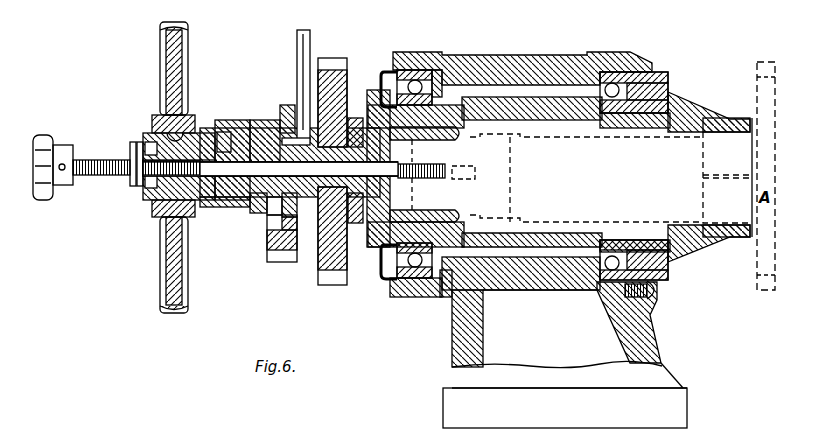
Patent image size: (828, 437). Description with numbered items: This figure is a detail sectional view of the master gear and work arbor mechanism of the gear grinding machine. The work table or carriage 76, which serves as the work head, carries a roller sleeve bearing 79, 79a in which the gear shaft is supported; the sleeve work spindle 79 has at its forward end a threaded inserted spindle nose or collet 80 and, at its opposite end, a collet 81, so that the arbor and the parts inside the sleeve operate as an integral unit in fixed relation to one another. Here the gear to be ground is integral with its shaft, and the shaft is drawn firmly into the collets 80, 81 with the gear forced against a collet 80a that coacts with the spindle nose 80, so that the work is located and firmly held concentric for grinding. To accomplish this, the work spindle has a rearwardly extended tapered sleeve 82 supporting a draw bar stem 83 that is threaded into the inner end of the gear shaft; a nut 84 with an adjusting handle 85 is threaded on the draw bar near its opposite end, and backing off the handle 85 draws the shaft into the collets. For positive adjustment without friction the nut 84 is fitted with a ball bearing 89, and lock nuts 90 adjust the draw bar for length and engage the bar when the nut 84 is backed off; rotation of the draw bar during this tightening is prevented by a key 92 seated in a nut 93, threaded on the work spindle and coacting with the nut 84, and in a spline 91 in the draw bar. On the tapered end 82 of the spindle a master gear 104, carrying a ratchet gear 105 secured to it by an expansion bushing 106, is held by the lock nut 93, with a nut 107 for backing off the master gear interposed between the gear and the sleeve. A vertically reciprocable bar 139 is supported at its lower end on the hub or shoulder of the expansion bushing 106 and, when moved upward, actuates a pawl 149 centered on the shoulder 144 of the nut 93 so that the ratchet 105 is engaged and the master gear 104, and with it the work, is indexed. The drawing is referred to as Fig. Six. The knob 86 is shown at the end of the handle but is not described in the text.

The work table or carriage 76 is at (524, 56).
The roller sleeve bearing 79 is at (540, 115).
The roller sleeve bearing 79a is at (410, 72).
The spindle nose or collet 80 is at (686, 105).
The collet 80a is at (736, 118).
The collet 81 is at (440, 210).
The tapered sleeve 82 is at (355, 118).
The draw bar stem 83 is at (418, 179).
The nut 84 is at (200, 200).
The adjusting handle 85 is at (160, 245).
The knob 86 is at (58, 147).
The ball bearing 89 is at (140, 192).
The lock nuts 90 is at (130, 176).
The spline 91 is at (252, 158).
The key 92 is at (222, 150).
The nut 93 is at (289, 105).
The master gear 104 is at (330, 285).
The ratchet gear 105 is at (287, 258).
The expansion bushing 106 is at (324, 62).
The nut 107 is at (356, 225).
The vertically reciprocable bar 139 is at (302, 30).
The shoulder 144 is at (186, 199).
The pawl 149 is at (262, 205).